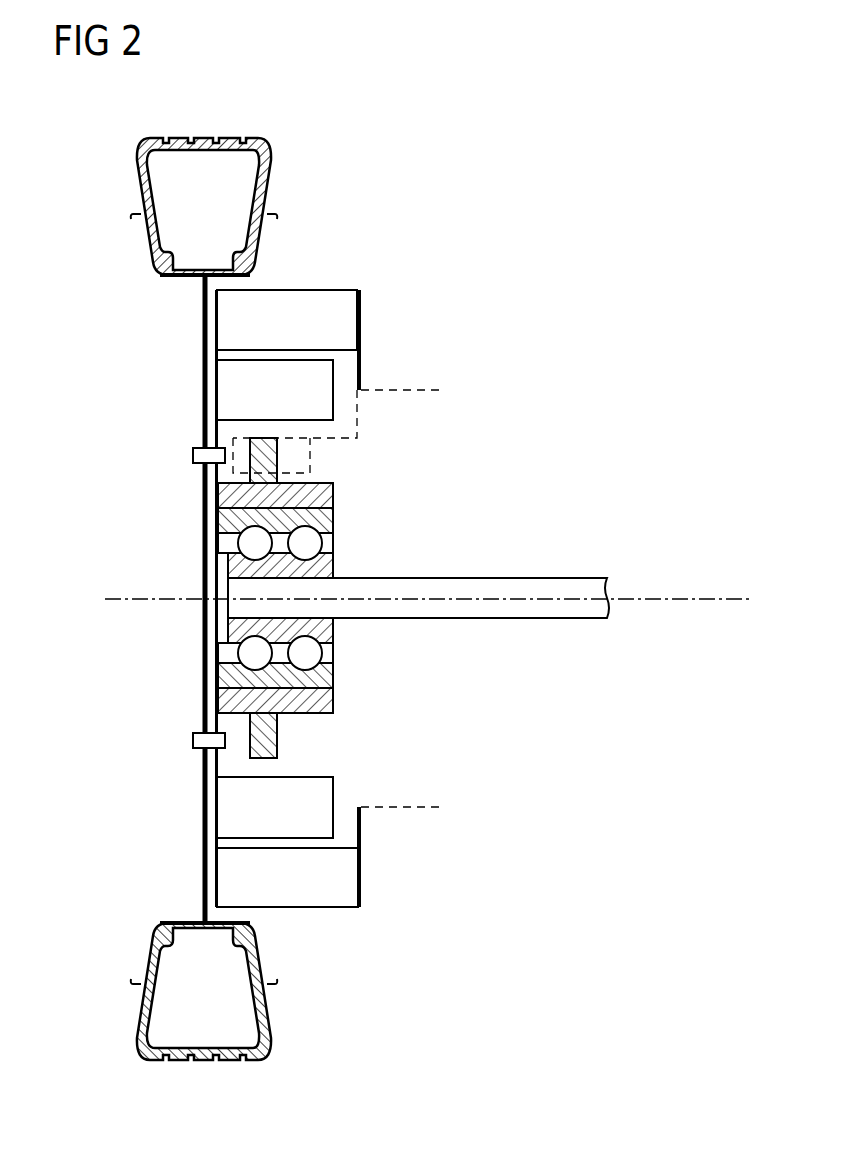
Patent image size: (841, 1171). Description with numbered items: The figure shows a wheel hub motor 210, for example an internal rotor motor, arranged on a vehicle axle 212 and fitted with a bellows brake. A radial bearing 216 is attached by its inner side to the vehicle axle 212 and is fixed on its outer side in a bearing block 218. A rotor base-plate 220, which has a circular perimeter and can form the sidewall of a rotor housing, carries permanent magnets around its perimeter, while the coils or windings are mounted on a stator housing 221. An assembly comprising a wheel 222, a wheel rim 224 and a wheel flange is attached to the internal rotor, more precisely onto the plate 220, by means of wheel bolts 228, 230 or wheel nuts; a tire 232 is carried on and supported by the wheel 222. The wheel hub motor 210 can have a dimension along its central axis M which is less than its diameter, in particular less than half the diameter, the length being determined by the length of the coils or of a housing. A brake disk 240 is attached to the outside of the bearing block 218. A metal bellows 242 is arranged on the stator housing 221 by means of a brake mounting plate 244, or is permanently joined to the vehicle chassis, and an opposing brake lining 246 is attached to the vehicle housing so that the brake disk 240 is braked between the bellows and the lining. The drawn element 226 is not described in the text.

The wheel hub motor 210 is at (515, 342).
The vehicle axle 212 is at (512, 578).
The radial bearing 216 is at (333, 563).
The bearing block 218 is at (333, 495).
The rotor base-plate 220 is at (215, 765).
The stator housing 221 is at (405, 390).
The wheel 222 is at (145, 238).
The wheel rim 224 is at (203, 383).
The wheel disc lower portion 226 is at (203, 653).
The wheel bolt 228 is at (193, 455).
The wheel bolt 230 is at (193, 740).
The tire 232 is at (140, 150).
The brake disk 240 is at (277, 748).
The metal bellows 242 is at (312, 455).
The brake mounting plate 244 is at (360, 413).
The opposing brake lining 246 is at (205, 475).
The central axis M is at (692, 598).